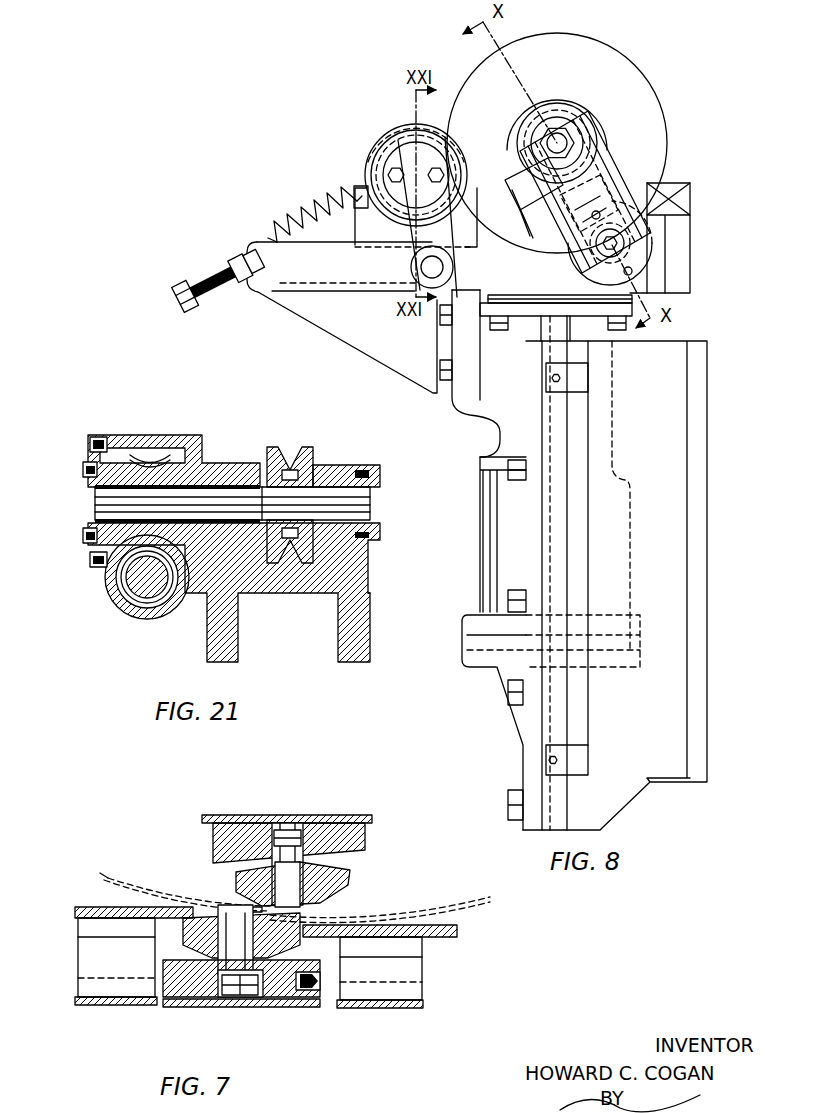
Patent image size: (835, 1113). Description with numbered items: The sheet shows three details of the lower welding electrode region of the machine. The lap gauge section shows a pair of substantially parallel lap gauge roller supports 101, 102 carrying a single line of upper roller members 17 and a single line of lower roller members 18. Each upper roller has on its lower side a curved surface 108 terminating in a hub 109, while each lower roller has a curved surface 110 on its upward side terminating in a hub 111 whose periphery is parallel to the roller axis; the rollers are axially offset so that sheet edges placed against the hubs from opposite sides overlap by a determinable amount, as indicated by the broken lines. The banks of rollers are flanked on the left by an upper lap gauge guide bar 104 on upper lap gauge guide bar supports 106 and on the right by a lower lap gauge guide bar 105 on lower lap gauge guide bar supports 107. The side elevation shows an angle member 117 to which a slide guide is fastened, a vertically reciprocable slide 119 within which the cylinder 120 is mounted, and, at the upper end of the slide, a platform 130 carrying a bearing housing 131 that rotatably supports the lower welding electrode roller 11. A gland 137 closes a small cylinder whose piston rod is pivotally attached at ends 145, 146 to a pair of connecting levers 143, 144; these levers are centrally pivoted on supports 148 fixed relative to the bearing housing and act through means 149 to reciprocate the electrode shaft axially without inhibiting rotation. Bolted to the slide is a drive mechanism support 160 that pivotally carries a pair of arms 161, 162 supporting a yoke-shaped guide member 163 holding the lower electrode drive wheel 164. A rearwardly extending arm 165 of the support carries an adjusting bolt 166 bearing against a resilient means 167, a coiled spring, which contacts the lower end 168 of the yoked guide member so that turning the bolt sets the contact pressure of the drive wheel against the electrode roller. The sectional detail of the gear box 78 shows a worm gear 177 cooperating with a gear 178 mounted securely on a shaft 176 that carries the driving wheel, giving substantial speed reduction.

In FIG. 8, the lower welding electrode roller 11 is at (641, 84).
In FIG. 7, the upper roller members 17 is at (335, 863).
In FIG. 7, the lower roller members 18 is at (200, 940).
In FIG. 8, the gear box 78 is at (380, 135).
In FIG. 21, the gear box 78 is at (122, 428).
In FIG. 7, the upper lap gauge roller support 101 is at (375, 834).
In FIG. 7, the lower lap gauge roller support 102 is at (285, 1008).
In FIG. 7, the upper lap gauge guide bar 104 is at (80, 905).
In FIG. 7, the lower lap gauge guide bar 105 is at (460, 935).
In FIG. 7, the upper lap gauge guide bar supports 106 is at (95, 957).
In FIG. 7, the lower lap gauge guide bar supports 107 is at (408, 970).
In FIG. 7, the curved surface 108 is at (340, 877).
In FIG. 7, the hub 109 is at (318, 905).
In FIG. 7, the curved surface 110 is at (215, 907).
In FIG. 7, the hub 111 is at (232, 913).
In FIG. 8, the angle member 117 is at (670, 403).
In FIG. 8, the vertically reciprocable slide 119 is at (522, 400).
In FIG. 8, the cylinder 120 is at (500, 507).
In FIG. 8, the platform 130 is at (528, 310).
In FIG. 8, the bearing housing 131 is at (526, 290).
In FIG. 8, the gland 137 is at (642, 256).
In FIG. 8, the connecting lever 143 is at (543, 188).
In FIG. 8, the connecting lever 144 is at (602, 180).
In FIG. 8, the lever end 145 is at (600, 252).
In FIG. 8, the lever end 146 is at (655, 232).
In FIG. 8, the supports 148 is at (578, 215).
In FIG. 8, the shaft shifting means 149 is at (553, 125).
In FIG. 8, the drive mechanism support 160 is at (450, 341).
In FIG. 8, the arm 161 is at (458, 235).
In FIG. 21, the arm 161 is at (363, 603).
In FIG. 21, the arm 162 is at (222, 613).
In FIG. 21, the yoke-shaped guide member 163 is at (332, 470).
In FIG. 8, the lower electrode drive wheel 164 is at (393, 145).
In FIG. 21, the lower electrode drive wheel 164 is at (305, 450).
In FIG. 8, the rearwardly extending arm 165 is at (307, 307).
In FIG. 8, the adjusting bolt 166 is at (202, 283).
In FIG. 8, the resilient means 167 is at (307, 220).
In FIG. 8, the lower end of yoked guide member 168 is at (355, 197).
In FIG. 21, the shaft 176 is at (222, 498).
In FIG. 21, the worm gear 177 is at (132, 583).
In FIG. 21, the gear 178 is at (175, 463).